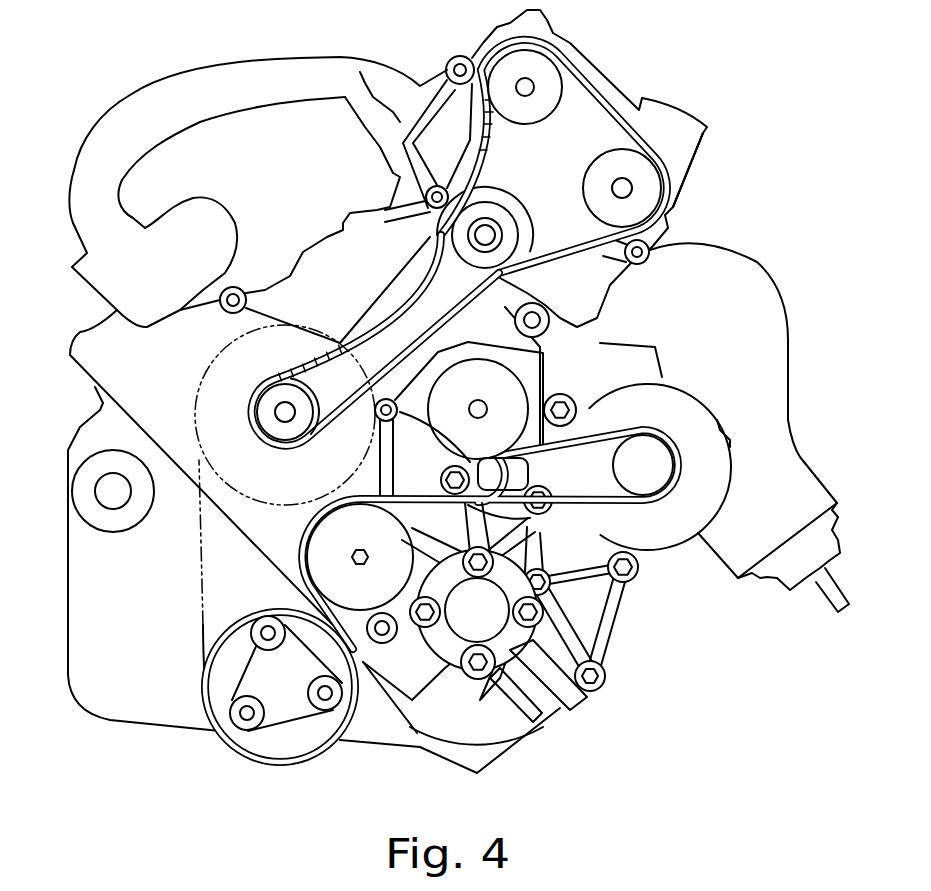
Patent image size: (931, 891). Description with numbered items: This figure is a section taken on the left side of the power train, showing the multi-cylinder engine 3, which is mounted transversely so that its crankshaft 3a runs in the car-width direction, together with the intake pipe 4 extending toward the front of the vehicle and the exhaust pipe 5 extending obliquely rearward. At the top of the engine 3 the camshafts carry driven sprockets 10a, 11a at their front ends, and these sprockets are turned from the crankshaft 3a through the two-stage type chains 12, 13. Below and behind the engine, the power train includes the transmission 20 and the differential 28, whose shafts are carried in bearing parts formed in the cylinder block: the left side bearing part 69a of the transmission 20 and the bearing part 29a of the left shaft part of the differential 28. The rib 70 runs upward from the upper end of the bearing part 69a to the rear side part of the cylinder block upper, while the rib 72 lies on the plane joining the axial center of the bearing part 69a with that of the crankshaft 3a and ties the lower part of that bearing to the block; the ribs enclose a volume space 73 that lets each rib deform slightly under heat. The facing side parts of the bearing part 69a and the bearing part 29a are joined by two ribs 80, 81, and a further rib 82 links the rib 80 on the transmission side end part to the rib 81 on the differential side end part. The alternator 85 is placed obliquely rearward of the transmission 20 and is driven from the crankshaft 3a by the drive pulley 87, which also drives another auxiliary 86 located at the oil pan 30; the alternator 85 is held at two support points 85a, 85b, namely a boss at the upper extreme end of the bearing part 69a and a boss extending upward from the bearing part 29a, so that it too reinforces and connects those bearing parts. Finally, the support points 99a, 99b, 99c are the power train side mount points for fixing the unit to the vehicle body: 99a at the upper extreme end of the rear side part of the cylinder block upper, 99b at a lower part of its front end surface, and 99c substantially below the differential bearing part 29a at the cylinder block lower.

The engine 3 is at (604, 70).
The crankshaft 3a is at (270, 422).
The intake pipe 4 is at (291, 58).
The exhaust pipe 5 is at (735, 257).
The driven sprocket 10a is at (505, 62).
The driven sprocket 11a is at (637, 167).
The chain 12 is at (678, 198).
The chain 13 is at (243, 393).
The transmission 20 is at (553, 383).
The differential 28 is at (612, 672).
The bearing part 29a is at (465, 655).
The oil pan 30 is at (147, 727).
The bearing part 69a is at (483, 452).
The rib 70 is at (541, 350).
The rib 72 is at (437, 472).
The space 73 is at (520, 360).
The rib 80 is at (554, 598).
The rib 81 is at (465, 515).
The rib 82 is at (500, 573).
The alternator 85 is at (688, 388).
The support point 85a is at (577, 410).
The support point 85b is at (631, 578).
The auxiliary 86 is at (311, 732).
The drive pulley 87 is at (627, 507).
The support point 99a is at (549, 315).
The support point 99b is at (224, 290).
The support point 99c is at (458, 648).